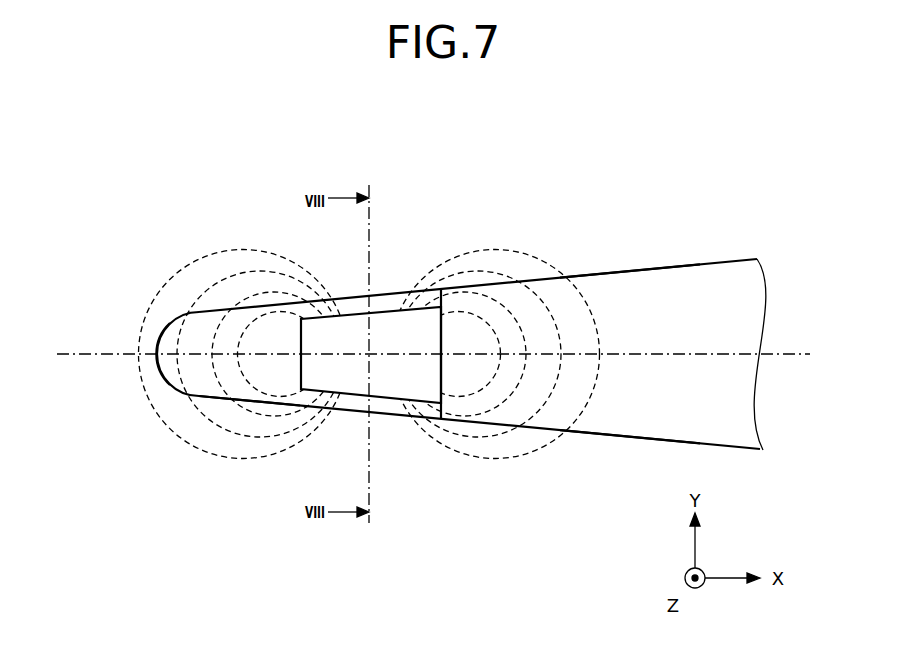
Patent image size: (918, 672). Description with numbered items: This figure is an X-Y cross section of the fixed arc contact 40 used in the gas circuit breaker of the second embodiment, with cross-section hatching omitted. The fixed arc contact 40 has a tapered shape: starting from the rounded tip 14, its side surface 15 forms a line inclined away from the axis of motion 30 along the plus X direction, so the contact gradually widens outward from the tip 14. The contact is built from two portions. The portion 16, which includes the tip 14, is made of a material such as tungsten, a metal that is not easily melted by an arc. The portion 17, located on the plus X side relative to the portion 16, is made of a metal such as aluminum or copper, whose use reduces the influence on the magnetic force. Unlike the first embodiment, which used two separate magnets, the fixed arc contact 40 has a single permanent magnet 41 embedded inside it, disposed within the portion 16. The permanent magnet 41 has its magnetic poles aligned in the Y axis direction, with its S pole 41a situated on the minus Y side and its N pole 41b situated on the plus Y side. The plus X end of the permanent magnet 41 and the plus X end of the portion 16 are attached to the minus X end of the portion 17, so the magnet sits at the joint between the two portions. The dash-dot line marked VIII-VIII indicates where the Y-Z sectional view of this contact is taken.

The tip 14 is at (158, 355).
The side surface 15 is at (615, 437).
The portion 16 is at (210, 386).
The portion 17 is at (632, 296).
The axis of motion 30 is at (94, 356).
The fixed arc contact 40 is at (426, 349).
The permanent magnet 41 is at (416, 265).
The S pole 41a is at (433, 372).
The N pole 41b is at (427, 325).